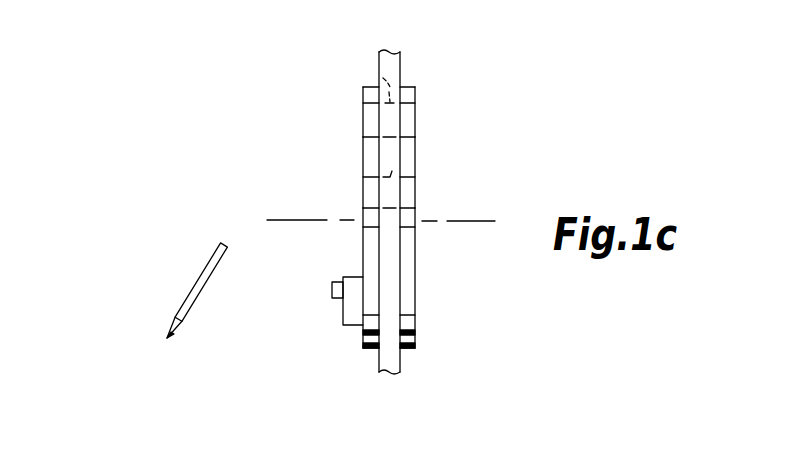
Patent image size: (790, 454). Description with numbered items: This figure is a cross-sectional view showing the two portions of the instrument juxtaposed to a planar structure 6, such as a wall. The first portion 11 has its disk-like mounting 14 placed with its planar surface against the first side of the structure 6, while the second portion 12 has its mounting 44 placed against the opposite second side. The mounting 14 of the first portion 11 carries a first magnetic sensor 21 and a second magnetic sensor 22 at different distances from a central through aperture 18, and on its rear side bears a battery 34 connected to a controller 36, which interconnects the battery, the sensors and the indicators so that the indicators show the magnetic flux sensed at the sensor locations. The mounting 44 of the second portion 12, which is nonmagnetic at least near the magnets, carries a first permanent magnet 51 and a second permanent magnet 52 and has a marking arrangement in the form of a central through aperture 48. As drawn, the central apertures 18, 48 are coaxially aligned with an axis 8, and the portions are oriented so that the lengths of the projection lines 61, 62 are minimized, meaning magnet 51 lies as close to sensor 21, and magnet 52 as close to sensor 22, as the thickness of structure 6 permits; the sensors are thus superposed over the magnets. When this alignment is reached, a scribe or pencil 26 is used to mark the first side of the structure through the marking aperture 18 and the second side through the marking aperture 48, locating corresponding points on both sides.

The planar structure 6 is at (401, 58).
The axis 8 is at (272, 221).
The first portion 11 is at (232, 202).
The second portion 12 is at (440, 197).
The mounting 14 is at (363, 346).
The central through aperture 18 is at (362, 228).
The first magnetic sensor 21 is at (363, 155).
The second magnetic sensor 22 is at (363, 112).
The scribe or pencil 26 is at (188, 316).
The battery 34 is at (332, 290).
The controller 36 is at (344, 325).
The mounting 44 is at (415, 340).
The central through aperture 48 is at (415, 228).
The first permanent magnet 51 is at (415, 162).
The second permanent magnet 52 is at (415, 113).
The projection line 61 is at (383, 178).
The projection line 62 is at (380, 80).